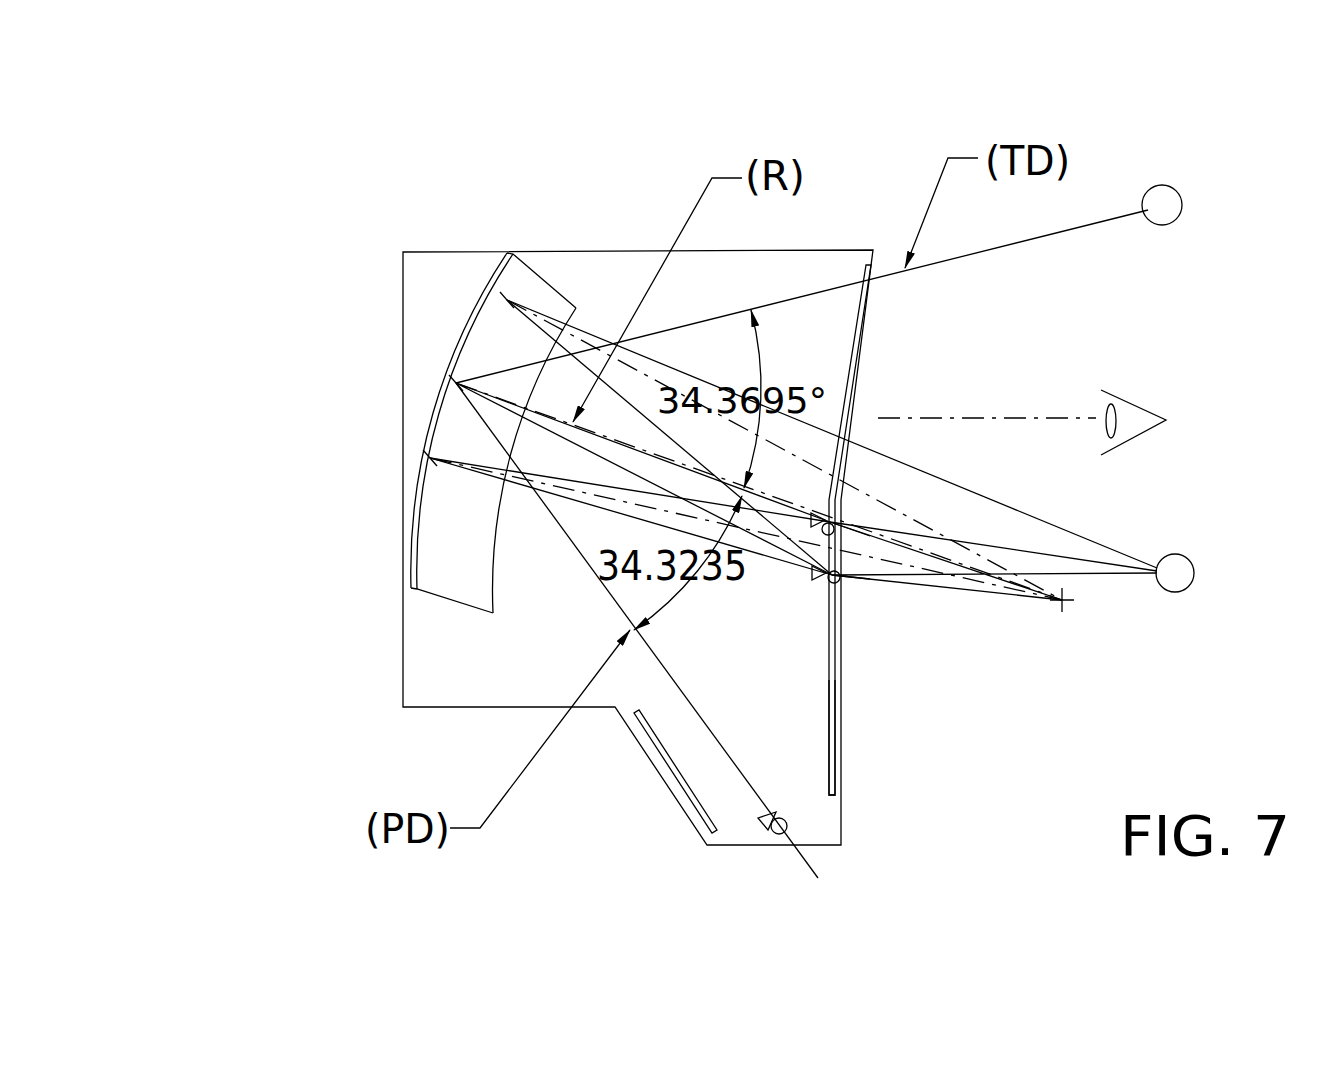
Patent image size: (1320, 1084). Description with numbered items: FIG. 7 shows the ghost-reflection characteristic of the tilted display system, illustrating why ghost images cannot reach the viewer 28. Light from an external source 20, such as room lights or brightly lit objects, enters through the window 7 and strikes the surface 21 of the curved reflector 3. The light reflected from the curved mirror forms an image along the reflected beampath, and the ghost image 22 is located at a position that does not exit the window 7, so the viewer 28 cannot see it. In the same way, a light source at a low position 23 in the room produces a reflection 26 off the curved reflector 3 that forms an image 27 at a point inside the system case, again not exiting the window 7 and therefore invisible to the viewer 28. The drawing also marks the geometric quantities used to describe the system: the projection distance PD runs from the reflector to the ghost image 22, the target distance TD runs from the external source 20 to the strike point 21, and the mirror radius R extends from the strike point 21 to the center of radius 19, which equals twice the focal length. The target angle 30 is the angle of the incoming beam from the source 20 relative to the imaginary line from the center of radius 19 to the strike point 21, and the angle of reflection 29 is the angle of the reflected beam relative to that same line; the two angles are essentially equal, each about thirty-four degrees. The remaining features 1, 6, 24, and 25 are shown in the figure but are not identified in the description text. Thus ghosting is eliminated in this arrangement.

The light source element 1 is at (650, 765).
The curved reflector 3 is at (410, 532).
The mirror lower portion 6 is at (836, 760).
The window 7 is at (868, 322).
The center of radius 19 is at (1066, 612).
The external source 20 is at (1175, 192).
The surface of the curved mirror 21 is at (453, 380).
The ghost image 22 is at (788, 842).
The low position light source 23 is at (1187, 590).
The lens point 24 is at (497, 300).
The reflected ray 25 is at (843, 542).
The reflection 26 is at (427, 455).
The image 27 is at (842, 595).
The viewer 28 is at (1123, 402).
The angle of reflection 29 is at (807, 574).
The target angle 30 is at (832, 466).